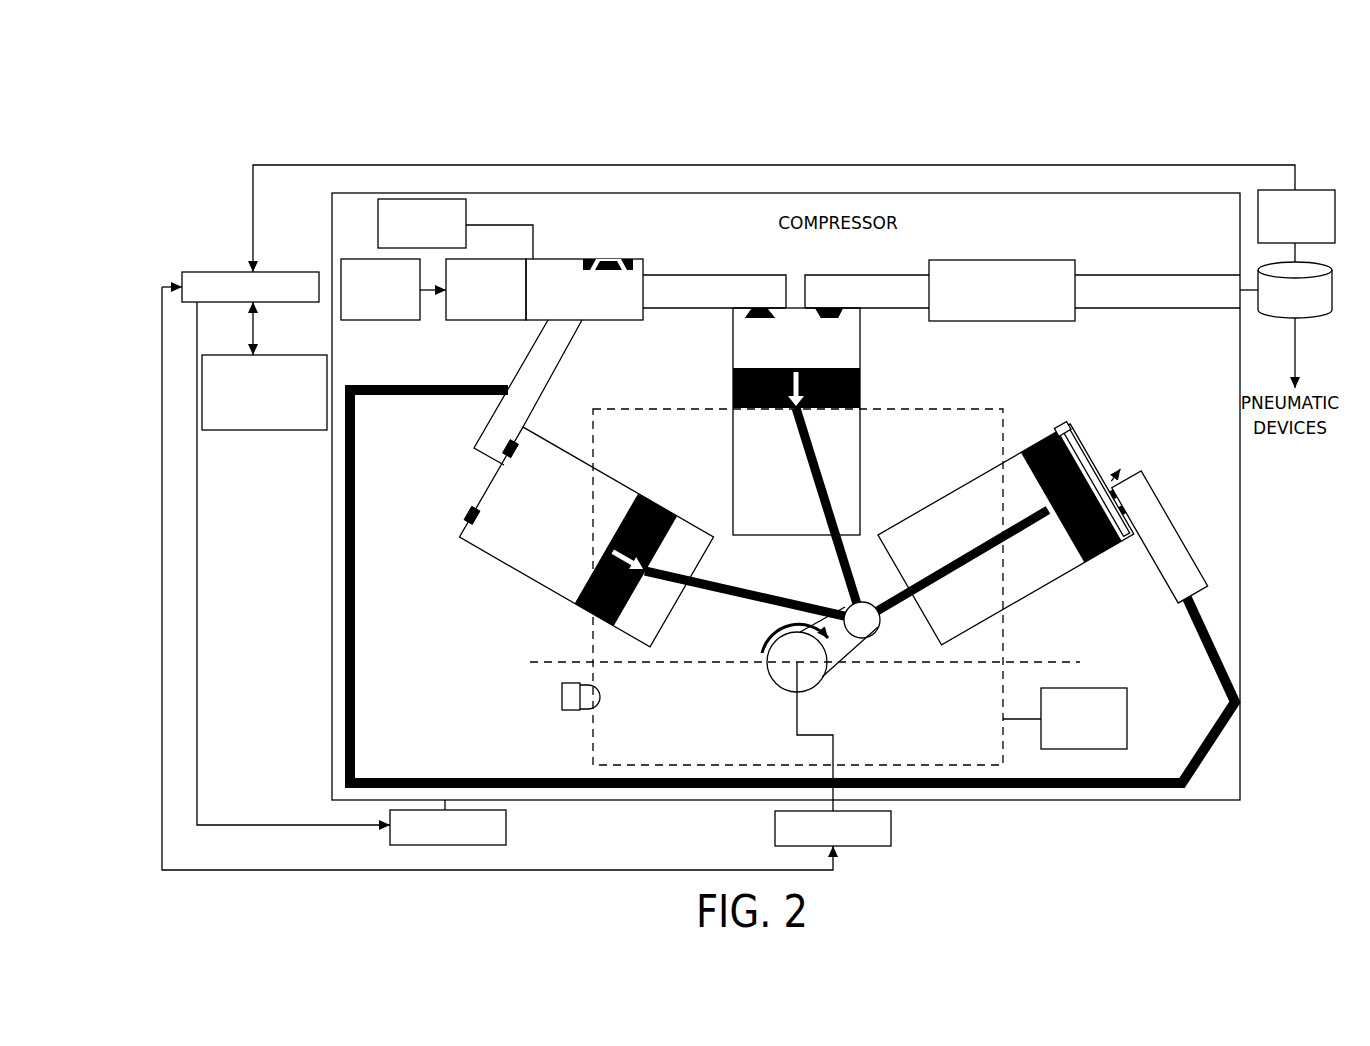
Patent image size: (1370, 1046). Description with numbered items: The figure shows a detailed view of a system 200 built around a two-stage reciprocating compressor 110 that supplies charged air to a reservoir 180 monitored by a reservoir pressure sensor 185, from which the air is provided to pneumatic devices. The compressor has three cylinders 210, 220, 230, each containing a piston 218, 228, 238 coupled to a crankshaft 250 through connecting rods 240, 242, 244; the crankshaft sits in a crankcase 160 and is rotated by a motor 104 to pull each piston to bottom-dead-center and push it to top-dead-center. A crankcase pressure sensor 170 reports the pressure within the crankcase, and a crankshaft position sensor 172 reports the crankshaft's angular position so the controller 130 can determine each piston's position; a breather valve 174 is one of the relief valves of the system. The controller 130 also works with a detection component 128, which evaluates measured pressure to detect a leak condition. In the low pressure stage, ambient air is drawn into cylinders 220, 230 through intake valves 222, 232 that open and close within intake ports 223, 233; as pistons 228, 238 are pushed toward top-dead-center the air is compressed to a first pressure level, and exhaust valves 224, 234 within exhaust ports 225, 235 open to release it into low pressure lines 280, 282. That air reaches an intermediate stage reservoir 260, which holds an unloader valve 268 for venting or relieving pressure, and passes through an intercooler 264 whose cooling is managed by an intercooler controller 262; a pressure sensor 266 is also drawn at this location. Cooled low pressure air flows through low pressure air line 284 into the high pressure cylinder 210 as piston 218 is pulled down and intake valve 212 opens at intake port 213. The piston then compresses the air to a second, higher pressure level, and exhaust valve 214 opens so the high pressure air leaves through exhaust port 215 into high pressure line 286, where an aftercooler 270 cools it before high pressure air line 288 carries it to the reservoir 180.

The motor 104 is at (508, 832).
The compressor 110 is at (1057, 203).
The detection component 128 is at (272, 355).
The controller 130 is at (220, 271).
The crankcase 160 is at (953, 409).
The crankcase pressure sensor 170 is at (1078, 750).
The crankshaft position sensor 172 is at (893, 835).
The breather valve 174 is at (560, 697).
The reservoir 180 is at (1276, 314).
The reservoir pressure sensor 185 is at (1318, 190).
The system 200 is at (1228, 127).
The cylinder 210 is at (770, 505).
The intake valve 212 is at (753, 307).
The intake port 213 is at (741, 323).
The exhaust valve 214 is at (823, 307).
The exhaust port 215 is at (808, 323).
The piston 218 is at (733, 392).
The cylinder 220 is at (1028, 568).
The intake valve 222 is at (1082, 450).
The intake port 223 is at (1065, 432).
The exhaust valve 224 is at (1128, 500).
The exhaust port 225 is at (1130, 540).
The piston 228 is at (1100, 553).
The cylinder 230 is at (537, 563).
The intake valve 232 is at (466, 512).
The intake port 233 is at (498, 521).
The exhaust valve 234 is at (500, 447).
The exhaust port 235 is at (536, 458).
The piston 238 is at (604, 624).
The connecting rod 240 is at (848, 553).
The connecting rod 242 is at (710, 588).
The connecting rod 244 is at (893, 607).
The crankshaft 250 is at (785, 678).
The intermediate stage reservoir 260 is at (588, 321).
The intercooler controller 262 is at (355, 258).
The intercooler 264 is at (485, 321).
The pressure sensor 266 is at (418, 197).
The unloader valve 268 is at (608, 258).
The aftercooler 270 is at (1030, 269).
The low pressure line 280 is at (1218, 651).
The low pressure line 282 is at (512, 383).
The low pressure air line 284 is at (692, 279).
The high pressure line 286 is at (900, 281).
The high pressure air line 288 is at (1164, 281).